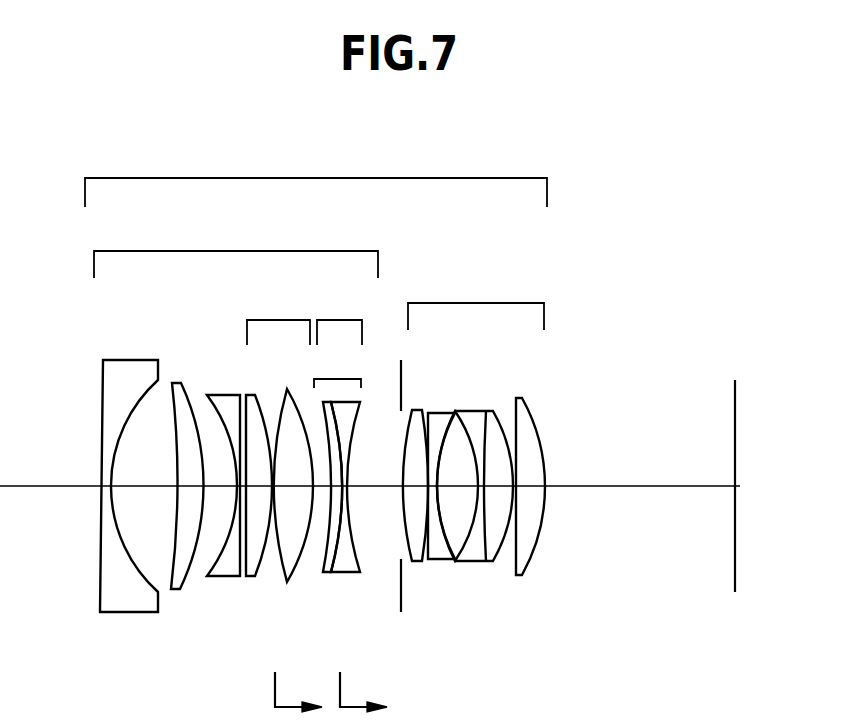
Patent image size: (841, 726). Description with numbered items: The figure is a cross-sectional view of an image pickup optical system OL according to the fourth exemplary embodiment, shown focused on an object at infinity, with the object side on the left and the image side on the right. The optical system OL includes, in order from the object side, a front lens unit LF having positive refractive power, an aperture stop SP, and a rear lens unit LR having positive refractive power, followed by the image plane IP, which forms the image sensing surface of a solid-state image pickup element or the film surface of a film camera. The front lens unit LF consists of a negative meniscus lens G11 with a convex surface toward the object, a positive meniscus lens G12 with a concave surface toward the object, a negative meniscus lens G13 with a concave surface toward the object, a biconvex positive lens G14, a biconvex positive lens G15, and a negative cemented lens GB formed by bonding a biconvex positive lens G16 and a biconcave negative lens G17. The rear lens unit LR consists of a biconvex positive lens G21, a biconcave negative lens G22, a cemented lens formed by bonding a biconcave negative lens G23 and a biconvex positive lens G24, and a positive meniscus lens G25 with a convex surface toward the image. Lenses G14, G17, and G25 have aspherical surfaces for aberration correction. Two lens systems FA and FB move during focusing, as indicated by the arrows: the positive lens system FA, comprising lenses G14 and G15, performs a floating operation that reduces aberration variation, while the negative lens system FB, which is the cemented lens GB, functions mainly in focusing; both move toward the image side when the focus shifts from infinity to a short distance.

The optical system OL is at (316, 181).
The front lens unit LF is at (236, 251).
The rear lens unit LR is at (476, 303).
The lens system FA is at (278, 319).
The lens system FB is at (339, 319).
The negative cemented lens GB is at (337, 369).
The negative lens G11 is at (108, 598).
The positive lens G12 is at (177, 590).
The negative lens G13 is at (223, 578).
The positive lens G14 is at (248, 578).
The positive lens G15 is at (285, 582).
The positive lens G16 is at (315, 572).
The negative lens G17 is at (343, 572).
The positive lens G21 is at (417, 549).
The negative lens G22 is at (440, 559).
The negative lens G23 is at (472, 562).
The positive lens G24 is at (500, 561).
The positive lens G25 is at (527, 545).
The aperture stop SP is at (403, 610).
The image plane IP is at (737, 405).